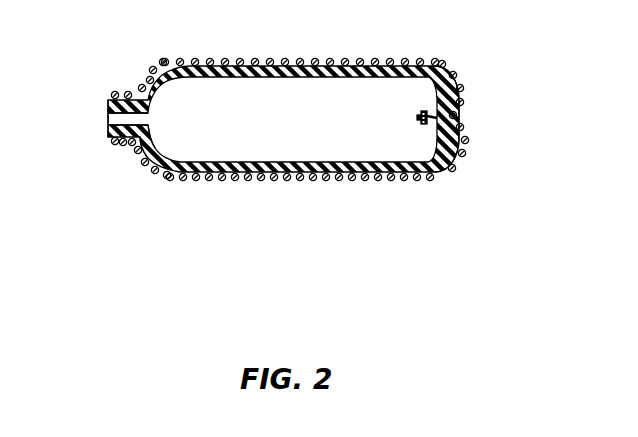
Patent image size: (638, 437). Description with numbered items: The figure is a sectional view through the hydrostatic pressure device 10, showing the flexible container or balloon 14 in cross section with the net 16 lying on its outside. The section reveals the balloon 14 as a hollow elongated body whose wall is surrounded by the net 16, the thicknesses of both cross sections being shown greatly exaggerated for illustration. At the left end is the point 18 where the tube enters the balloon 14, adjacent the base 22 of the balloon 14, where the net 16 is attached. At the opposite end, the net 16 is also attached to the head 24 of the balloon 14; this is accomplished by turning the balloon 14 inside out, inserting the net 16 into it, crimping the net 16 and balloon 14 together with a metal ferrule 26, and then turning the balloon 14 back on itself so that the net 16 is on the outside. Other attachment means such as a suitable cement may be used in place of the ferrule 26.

The hydrostatic pressure device 10 is at (309, 117).
The flexible container or balloon 14 is at (272, 178).
The net 16 is at (444, 64).
The point where tube enters balloon 18 is at (108, 135).
The base of balloon 22 is at (150, 166).
The head of balloon 24 is at (456, 114).
The metal ferrule 26 is at (427, 128).